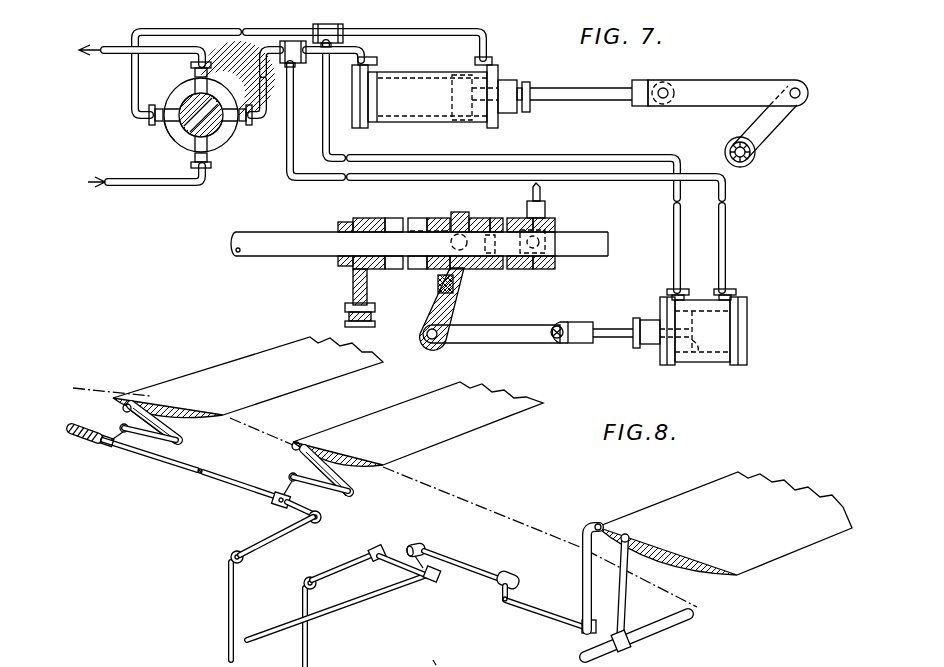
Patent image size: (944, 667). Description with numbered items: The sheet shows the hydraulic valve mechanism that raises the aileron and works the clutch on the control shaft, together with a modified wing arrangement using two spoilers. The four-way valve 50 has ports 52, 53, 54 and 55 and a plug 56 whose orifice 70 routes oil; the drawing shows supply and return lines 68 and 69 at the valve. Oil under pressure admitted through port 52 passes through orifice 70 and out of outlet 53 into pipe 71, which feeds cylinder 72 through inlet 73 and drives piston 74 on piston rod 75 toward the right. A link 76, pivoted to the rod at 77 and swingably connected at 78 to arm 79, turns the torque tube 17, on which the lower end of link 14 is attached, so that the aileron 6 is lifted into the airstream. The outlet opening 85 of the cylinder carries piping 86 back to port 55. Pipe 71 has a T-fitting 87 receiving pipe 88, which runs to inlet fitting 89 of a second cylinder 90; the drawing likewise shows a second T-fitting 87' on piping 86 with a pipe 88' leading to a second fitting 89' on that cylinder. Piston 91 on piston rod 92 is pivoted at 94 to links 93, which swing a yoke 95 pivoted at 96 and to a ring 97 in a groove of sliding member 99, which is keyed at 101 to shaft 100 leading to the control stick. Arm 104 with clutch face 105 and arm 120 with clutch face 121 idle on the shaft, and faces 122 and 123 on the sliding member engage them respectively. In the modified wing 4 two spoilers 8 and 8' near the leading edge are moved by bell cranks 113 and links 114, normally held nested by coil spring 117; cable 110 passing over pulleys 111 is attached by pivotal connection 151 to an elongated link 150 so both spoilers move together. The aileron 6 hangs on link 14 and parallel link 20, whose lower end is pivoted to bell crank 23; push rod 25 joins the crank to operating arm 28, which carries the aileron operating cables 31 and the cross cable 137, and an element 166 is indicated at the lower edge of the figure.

In FIG. 7, the valve 50 is at (222, 96).
In FIG. 7, the port 52 is at (208, 148).
In FIG. 7, the outlet 53 is at (238, 131).
In FIG. 7, the port 54 is at (207, 82).
In FIG. 7, the port 55 is at (167, 128).
In FIG. 7, the plug 56 is at (180, 141).
In FIG. 7, the orifice 70 is at (216, 130).
In FIG. 7, the inlet pipe 68 is at (138, 186).
In FIG. 7, the outlet pipe 69 is at (112, 54).
In FIG. 7, the pipe 71 is at (263, 92).
In FIG. 7, the cylinder 72 is at (419, 85).
In FIG. 7, the inlet 73 is at (380, 68).
In FIG. 7, the piston 74 is at (454, 112).
In FIG. 7, the piston rod 75 is at (580, 87).
In FIG. 7, the link 76 is at (725, 85).
In FIG. 7, the pivot 77 is at (667, 85).
In FIG. 7, the swingable connection 78 is at (800, 88).
In FIG. 7, the arm 79 is at (773, 127).
In FIG. 7, the torque tube 17 is at (725, 146).
In FIG. 8, the torque tube 17 is at (648, 640).
In FIG. 7, the outlet opening 85 is at (494, 64).
In FIG. 7, the piping 86 is at (134, 99).
In FIG. 7, the T-fitting 87 is at (299, 64).
In FIG. 7, the T fitting 87' is at (314, 27).
In FIG. 7, the pipe 88 is at (524, 177).
In FIG. 7, the pipe 88' is at (501, 166).
In FIG. 7, the inlet fitting 89 is at (741, 285).
In FIG. 7, the pipe fitting 89' is at (692, 287).
In FIG. 7, the cylinder 90 is at (722, 358).
In FIG. 7, the piston 91 is at (693, 357).
In FIG. 7, the piston rod 92 is at (606, 330).
In FIG. 7, the links 93 is at (504, 335).
In FIG. 7, the pivot 94 is at (560, 344).
In FIG. 7, the yoke 95 is at (455, 302).
In FIG. 7, the pivot 96 is at (437, 288).
In FIG. 7, the ring 97 is at (463, 214).
In FIG. 7, the sliding member 99 is at (440, 217).
In FIG. 7, the shaft 100 is at (286, 250).
In FIG. 7, the key 101 is at (474, 225).
In FIG. 7, the arm 104 is at (353, 287).
In FIG. 7, the clutch face 105 is at (395, 217).
In FIG. 7, the arm 120 is at (523, 267).
In FIG. 7, the clutch face 121 is at (504, 265).
In FIG. 7, the clutch face 122 is at (420, 217).
In FIG. 7, the clutch face 123 is at (487, 231).
In FIG. 8, the airfoil 4 is at (490, 508).
In FIG. 8, the aileron 6 is at (682, 499).
In FIG. 8, the spoiler 8 is at (248, 374).
In FIG. 8, the spoiler 8' is at (418, 422).
In FIG. 8, the link 14 is at (624, 595).
In FIG. 8, the link 20 is at (583, 578).
In FIG. 8, the bell crank 23 is at (540, 615).
In FIG. 8, the push rod 25 is at (473, 565).
In FIG. 8, the operating arm 28 is at (397, 565).
In FIG. 8, the aileron operating cables 31 is at (332, 568).
In FIG. 8, the cable 110 is at (271, 538).
In FIG. 8, the pulleys 111 is at (322, 518).
In FIG. 8, the bell crank 113 is at (121, 426).
In FIG. 8, the links 114 is at (177, 426).
In FIG. 8, the coil spring 117 is at (87, 439).
In FIG. 8, the cable 137 is at (368, 602).
In FIG. 8, the elongated link 150 is at (223, 480).
In FIG. 8, the pivotal connection 151 is at (273, 506).
In FIG. 8, the rod 166 is at (448, 660).